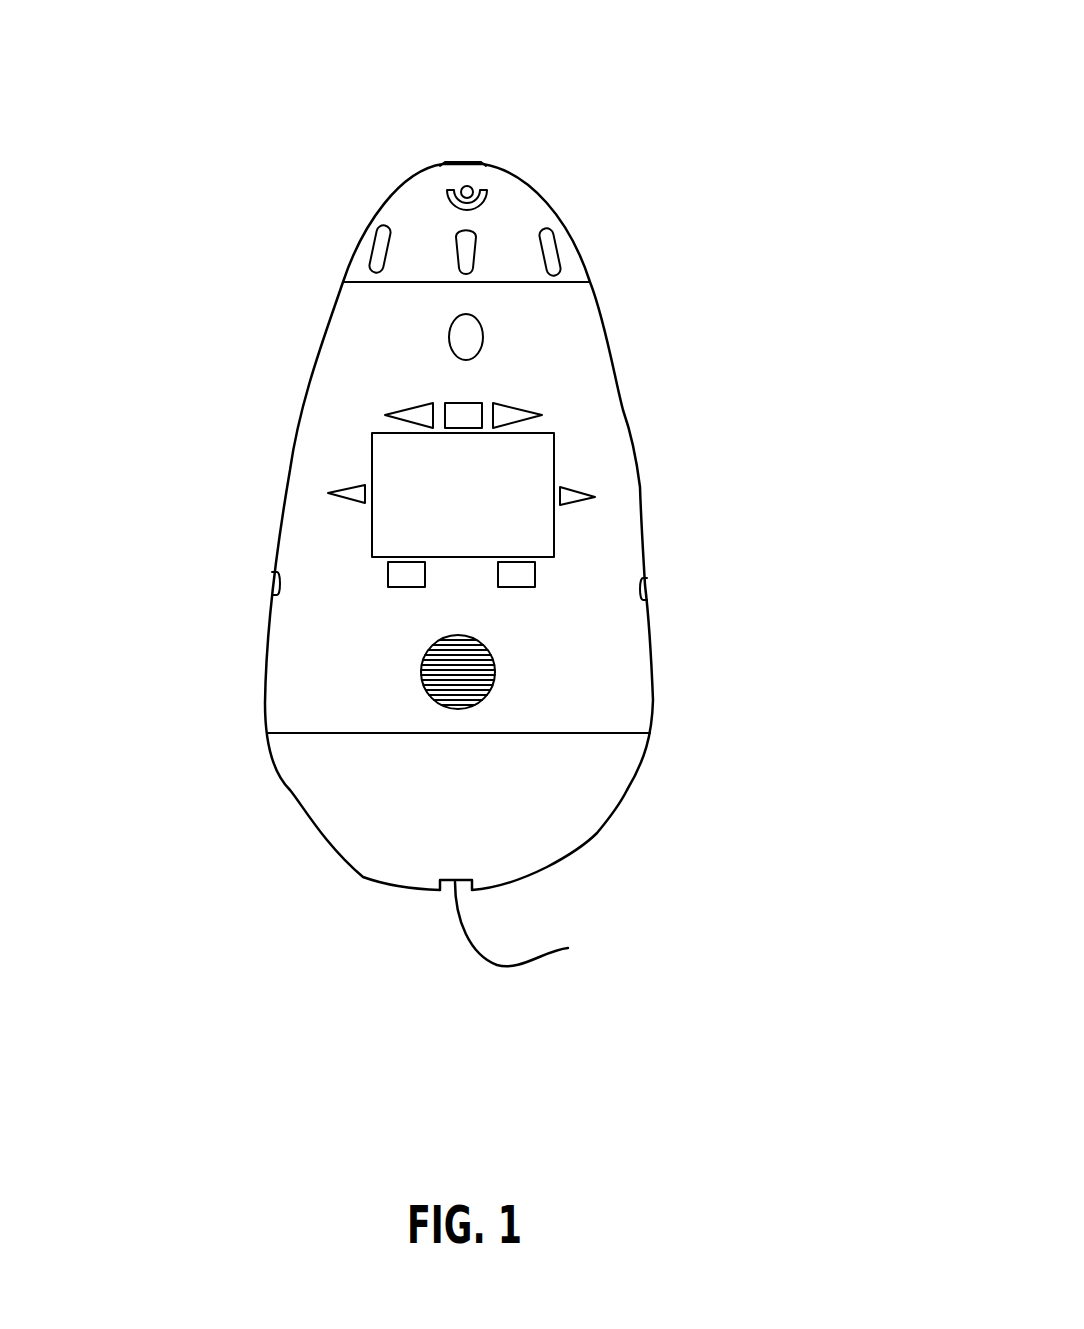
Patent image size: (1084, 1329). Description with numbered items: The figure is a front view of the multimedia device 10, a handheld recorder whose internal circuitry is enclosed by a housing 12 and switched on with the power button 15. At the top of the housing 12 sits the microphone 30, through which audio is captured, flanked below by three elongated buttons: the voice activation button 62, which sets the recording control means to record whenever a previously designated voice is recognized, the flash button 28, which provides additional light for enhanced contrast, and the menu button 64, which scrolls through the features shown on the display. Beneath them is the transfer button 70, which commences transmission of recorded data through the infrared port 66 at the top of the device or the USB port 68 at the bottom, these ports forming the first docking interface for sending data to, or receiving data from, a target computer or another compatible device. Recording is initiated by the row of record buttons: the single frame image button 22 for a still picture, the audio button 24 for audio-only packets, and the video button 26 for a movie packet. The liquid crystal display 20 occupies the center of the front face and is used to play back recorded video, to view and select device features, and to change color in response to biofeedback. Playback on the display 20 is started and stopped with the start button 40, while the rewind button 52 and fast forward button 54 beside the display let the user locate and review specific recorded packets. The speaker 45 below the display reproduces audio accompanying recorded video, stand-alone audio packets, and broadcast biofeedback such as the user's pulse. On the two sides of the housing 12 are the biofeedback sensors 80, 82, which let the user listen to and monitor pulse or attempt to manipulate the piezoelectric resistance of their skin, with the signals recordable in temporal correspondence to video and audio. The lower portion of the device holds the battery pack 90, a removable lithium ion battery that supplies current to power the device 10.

The multimedia device 10 is at (678, 106).
The housing 12 is at (266, 703).
The power button 15 is at (405, 575).
The liquid crystal display 20 is at (488, 491).
The single frame image button 22 is at (405, 414).
The audio button 24 is at (467, 415).
The video button 26 is at (522, 415).
The flash button 28 is at (460, 240).
The microphone 30 is at (470, 190).
The start button 40 is at (517, 577).
The speaker 45 is at (493, 687).
The rewind button 52 is at (350, 492).
The fast forward button 54 is at (578, 496).
The voice activation button 62 is at (378, 234).
The menu button 64 is at (560, 248).
The infrared port 66 is at (467, 160).
The USB port 68 is at (532, 926).
The transfer button 70 is at (455, 337).
The biofeedback sensor 80 is at (650, 590).
The biofeedback sensor 82 is at (274, 585).
The battery pack 90 is at (613, 782).